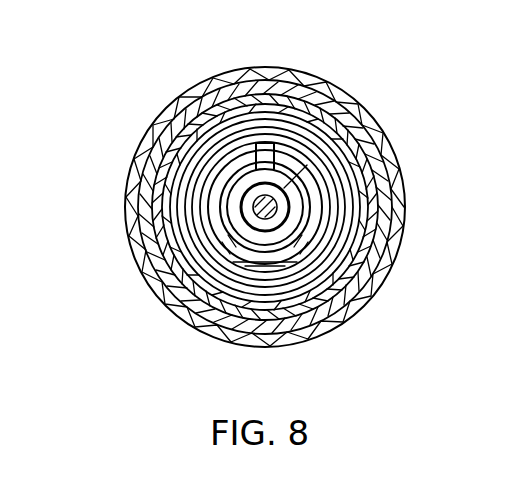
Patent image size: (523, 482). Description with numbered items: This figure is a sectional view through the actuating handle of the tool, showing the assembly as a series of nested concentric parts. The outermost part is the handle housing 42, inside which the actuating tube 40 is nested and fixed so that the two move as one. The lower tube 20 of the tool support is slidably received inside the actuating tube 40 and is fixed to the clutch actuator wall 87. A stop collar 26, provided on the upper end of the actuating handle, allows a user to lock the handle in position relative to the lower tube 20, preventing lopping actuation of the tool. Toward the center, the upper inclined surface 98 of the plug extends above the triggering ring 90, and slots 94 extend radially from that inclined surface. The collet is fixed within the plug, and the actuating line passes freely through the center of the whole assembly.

The lower tube 20 is at (192, 287).
The stop collar 26 is at (266, 348).
The actuating tube 40 is at (148, 142).
The handle housing 42 is at (128, 190).
The clutch actuator wall 87 is at (235, 330).
The triggering ring 90 is at (230, 140).
The slots 94 is at (262, 142).
The upper inclined surface 98 is at (296, 156).